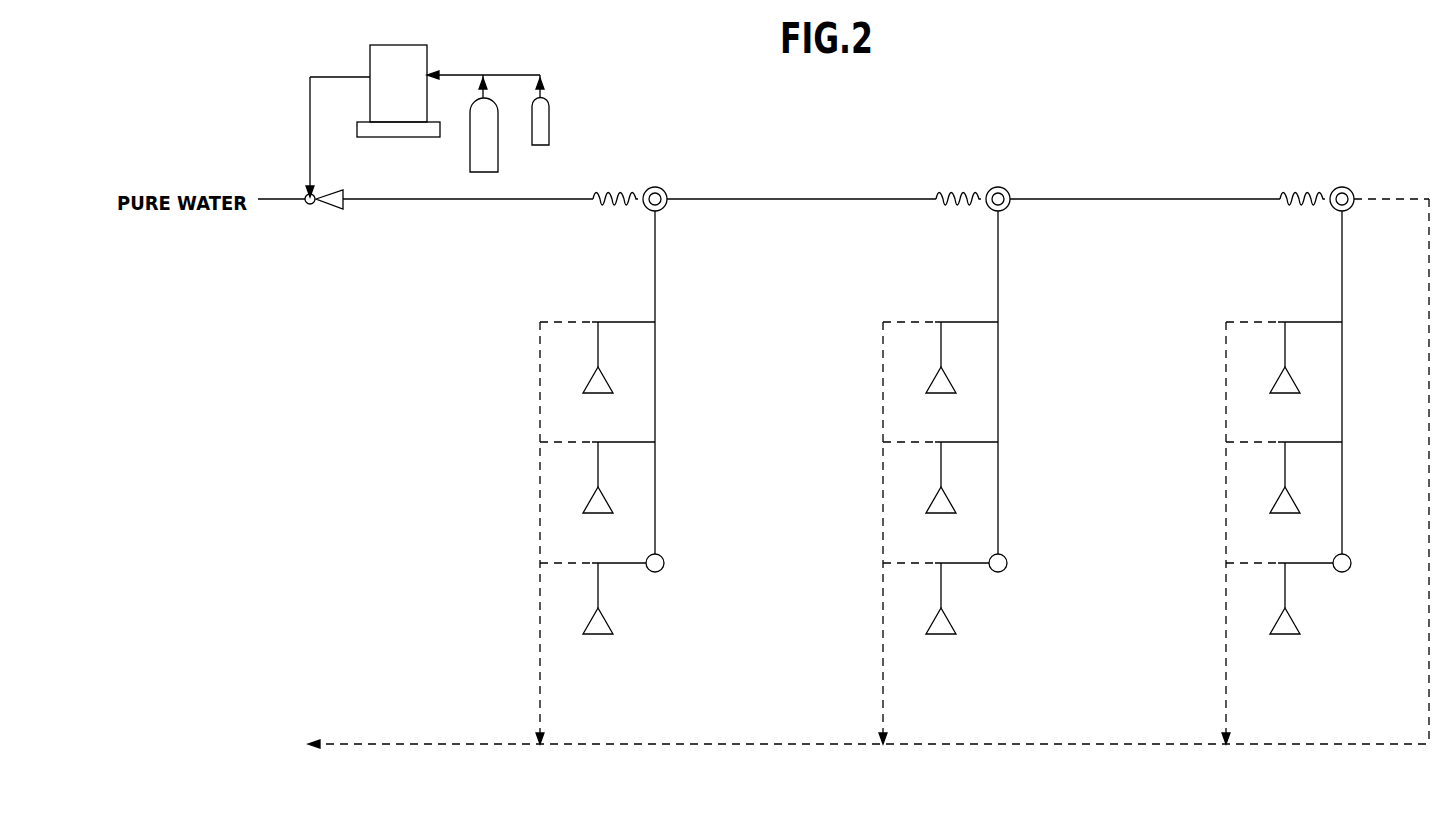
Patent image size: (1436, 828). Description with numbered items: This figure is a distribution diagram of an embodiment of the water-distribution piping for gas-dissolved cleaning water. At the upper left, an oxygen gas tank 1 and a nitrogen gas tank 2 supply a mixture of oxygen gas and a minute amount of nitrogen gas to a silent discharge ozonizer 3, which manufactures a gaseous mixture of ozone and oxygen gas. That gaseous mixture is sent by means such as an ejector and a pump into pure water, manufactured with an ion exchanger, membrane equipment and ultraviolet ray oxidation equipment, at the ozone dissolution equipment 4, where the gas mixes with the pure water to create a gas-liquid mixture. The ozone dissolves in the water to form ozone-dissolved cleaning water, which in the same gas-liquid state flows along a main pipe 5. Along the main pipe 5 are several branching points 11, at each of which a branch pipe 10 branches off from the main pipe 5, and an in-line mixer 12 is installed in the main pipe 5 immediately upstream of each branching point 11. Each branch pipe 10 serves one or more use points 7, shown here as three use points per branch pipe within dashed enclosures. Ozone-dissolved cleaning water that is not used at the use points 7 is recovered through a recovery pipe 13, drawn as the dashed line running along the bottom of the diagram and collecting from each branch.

The oxygen gas tank 1 is at (492, 158).
The nitrogen gas tank 2 is at (549, 110).
The silent discharge ozonizer 3 is at (393, 110).
The ozone dissolution equipment 4 is at (328, 208).
The main pipe 5 is at (795, 197).
The use point 7 is at (590, 380).
The branch pipe 10 is at (657, 275).
The branching point 11 is at (655, 187).
The in-line mixer 12 is at (619, 190).
The recovery pipe 13 is at (740, 742).